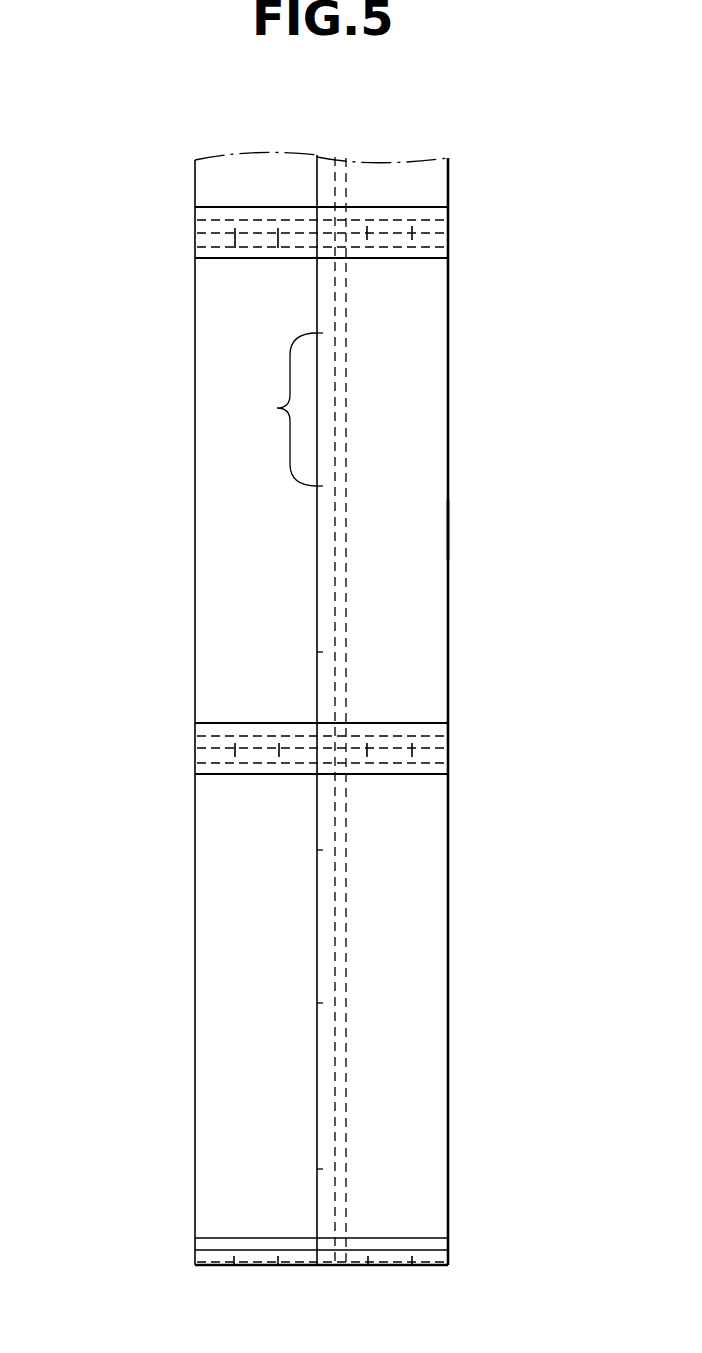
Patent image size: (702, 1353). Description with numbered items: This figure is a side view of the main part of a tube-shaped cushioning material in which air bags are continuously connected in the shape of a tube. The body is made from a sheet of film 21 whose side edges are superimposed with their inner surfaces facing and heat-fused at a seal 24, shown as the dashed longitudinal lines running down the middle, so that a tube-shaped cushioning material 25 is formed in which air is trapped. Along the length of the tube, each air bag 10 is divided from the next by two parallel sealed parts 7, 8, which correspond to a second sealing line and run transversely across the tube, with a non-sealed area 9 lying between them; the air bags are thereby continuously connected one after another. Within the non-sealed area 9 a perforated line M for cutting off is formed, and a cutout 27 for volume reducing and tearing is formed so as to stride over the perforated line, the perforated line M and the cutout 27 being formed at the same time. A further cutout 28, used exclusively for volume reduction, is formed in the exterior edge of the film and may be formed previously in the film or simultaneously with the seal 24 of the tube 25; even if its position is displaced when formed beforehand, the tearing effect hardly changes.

The sealed part 7 is at (418, 212).
The sealed part 8 is at (417, 253).
The non-sealed area 9 is at (443, 227).
The air bag 10 is at (427, 613).
The sheet of film 21 is at (427, 382).
The heat-fused seal 24 is at (340, 467).
The tube-shaped cushioning material 25 is at (427, 528).
The cutout for volume reducing and tearing 27 is at (278, 248).
The cutout exclusively used for volume reduction 28 is at (490, 993).
The perforated line M is at (218, 232).